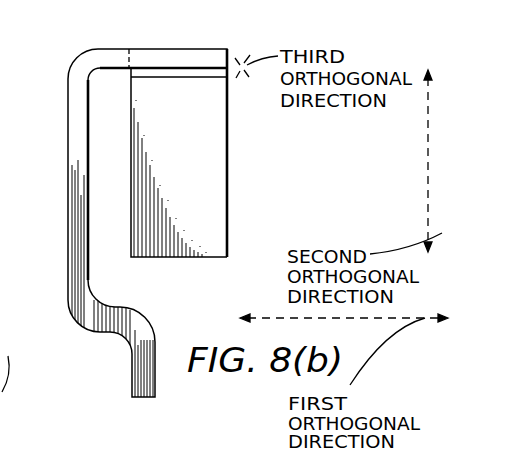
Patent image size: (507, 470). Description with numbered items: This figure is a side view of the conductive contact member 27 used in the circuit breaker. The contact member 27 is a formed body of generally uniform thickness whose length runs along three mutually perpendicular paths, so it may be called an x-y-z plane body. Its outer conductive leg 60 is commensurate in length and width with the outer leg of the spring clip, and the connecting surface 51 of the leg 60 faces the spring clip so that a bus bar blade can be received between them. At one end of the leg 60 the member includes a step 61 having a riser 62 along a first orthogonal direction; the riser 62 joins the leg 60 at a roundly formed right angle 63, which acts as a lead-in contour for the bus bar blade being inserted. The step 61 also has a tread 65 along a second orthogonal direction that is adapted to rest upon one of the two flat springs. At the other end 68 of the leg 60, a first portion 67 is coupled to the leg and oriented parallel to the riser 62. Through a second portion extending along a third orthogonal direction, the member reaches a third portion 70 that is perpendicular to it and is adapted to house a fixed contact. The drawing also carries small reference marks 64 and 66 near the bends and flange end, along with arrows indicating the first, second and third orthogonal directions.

The conductive contact member 27 is at (120, 117).
The connecting surface 51 is at (72, 225).
The outer conductive leg 60 is at (76, 155).
The step 61 is at (150, 319).
The riser 62 is at (112, 333).
The roundly formed right angle 63 is at (86, 318).
The bend 64 is at (93, 298).
The tread 65 is at (153, 393).
The flange end 66 is at (224, 46).
The first portion 67 is at (97, 48).
The other end of the leg 68 is at (67, 96).
The third portion 70 is at (219, 163).